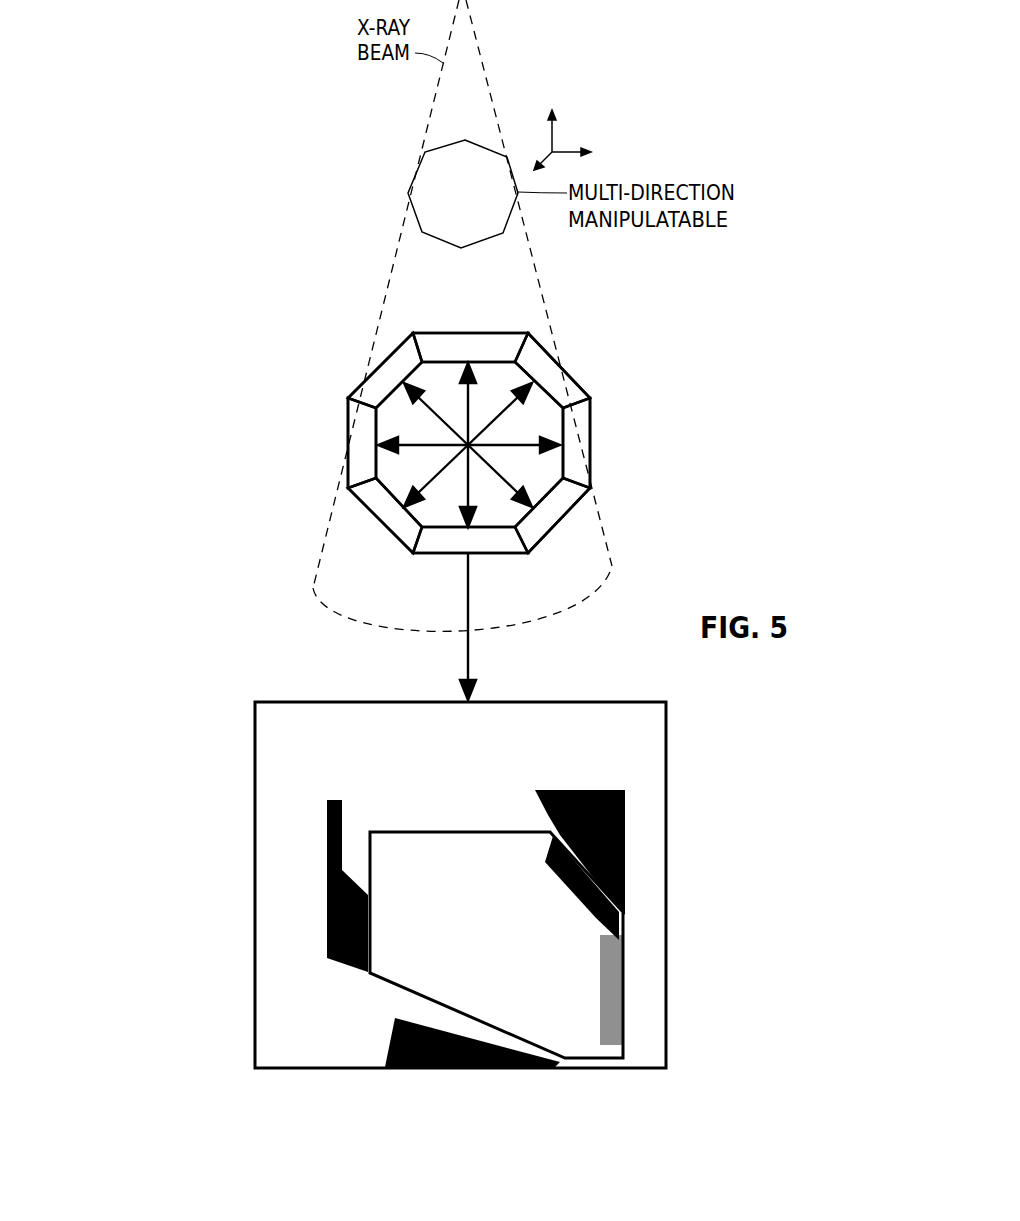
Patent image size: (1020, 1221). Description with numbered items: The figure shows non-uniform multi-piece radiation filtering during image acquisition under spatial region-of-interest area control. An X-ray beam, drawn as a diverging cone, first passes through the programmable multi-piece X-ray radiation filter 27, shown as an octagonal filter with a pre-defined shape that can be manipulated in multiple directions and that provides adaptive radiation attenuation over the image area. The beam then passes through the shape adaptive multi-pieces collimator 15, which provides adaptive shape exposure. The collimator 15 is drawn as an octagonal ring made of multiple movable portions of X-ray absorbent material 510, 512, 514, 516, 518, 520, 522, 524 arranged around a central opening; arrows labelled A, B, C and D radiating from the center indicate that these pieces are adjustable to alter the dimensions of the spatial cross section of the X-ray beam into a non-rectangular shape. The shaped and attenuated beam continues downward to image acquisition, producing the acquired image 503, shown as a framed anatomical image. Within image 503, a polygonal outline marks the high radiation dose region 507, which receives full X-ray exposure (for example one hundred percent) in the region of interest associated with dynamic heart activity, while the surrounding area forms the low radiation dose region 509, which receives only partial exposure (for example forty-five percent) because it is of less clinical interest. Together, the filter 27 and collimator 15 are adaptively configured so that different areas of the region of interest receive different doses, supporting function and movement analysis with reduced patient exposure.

The X-ray radiation filter 27 is at (417, 165).
The shape adaptive collimator 15 is at (410, 445).
The movable portion of X-ray absorbent material 510 is at (480, 343).
The movable portion of X-ray absorbent material 512 is at (557, 385).
The movable portion of X-ray absorbent material 514 is at (570, 463).
The movable portion of X-ray absorbent material 516 is at (565, 502).
The movable portion of X-ray absorbent material 518 is at (495, 538).
The collimator piece 520 is at (388, 507).
The movable portion of X-ray absorbent material 522 is at (357, 462).
The movable portion of X-ray absorbent material 524 is at (387, 368).
The image 503 is at (255, 748).
The low radiation dose region 509 is at (595, 813).
The high radiation dose region 507 is at (603, 1000).